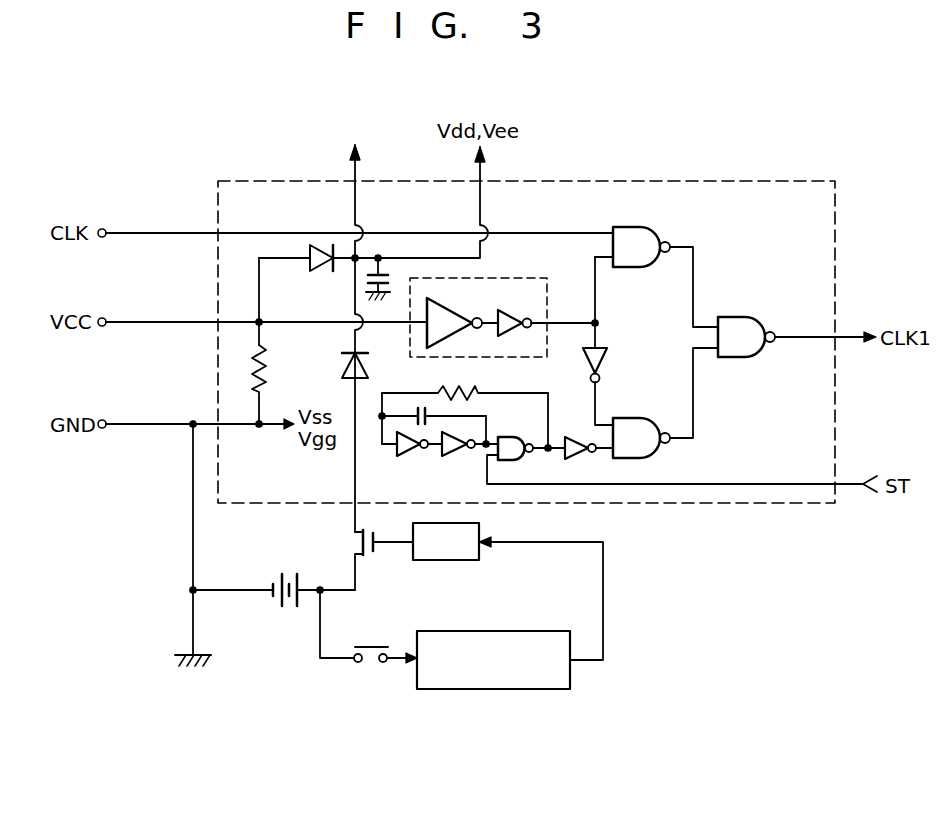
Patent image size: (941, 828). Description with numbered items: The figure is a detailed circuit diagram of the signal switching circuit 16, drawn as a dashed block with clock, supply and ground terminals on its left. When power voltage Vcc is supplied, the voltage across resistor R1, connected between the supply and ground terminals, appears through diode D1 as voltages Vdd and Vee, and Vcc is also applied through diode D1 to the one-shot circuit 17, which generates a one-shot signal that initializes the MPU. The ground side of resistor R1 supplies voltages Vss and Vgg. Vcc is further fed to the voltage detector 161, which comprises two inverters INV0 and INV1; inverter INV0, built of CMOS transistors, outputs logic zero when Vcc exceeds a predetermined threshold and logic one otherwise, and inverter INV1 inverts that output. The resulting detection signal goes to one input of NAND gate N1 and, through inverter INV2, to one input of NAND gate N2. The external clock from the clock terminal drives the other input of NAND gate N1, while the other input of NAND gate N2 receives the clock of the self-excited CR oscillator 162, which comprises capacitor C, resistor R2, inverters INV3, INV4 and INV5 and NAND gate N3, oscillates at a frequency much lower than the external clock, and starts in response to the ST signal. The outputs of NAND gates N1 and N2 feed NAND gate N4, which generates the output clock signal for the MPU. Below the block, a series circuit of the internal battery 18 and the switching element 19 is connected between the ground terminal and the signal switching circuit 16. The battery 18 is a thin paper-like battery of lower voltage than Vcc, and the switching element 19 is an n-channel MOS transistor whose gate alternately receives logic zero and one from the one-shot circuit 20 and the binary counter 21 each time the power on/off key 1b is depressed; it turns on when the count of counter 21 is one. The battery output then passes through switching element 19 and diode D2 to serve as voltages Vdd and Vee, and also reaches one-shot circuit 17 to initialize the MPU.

The signal switching circuit 16 is at (762, 162).
The voltage detector 161 is at (502, 302).
The CR oscillator 162 is at (620, 451).
The one-shot circuit 17 is at (330, 315).
The internal battery 18 is at (285, 573).
The switching element 19 is at (352, 541).
The one-shot circuit 20 is at (505, 630).
The binary counter 21 is at (437, 562).
The power on/off key 1b is at (380, 645).
The diode D1 is at (307, 273).
The diode D2 is at (372, 367).
The resistor R1 is at (273, 384).
The resistor R2 is at (465, 383).
The capacitor C is at (434, 408).
The inverter INV0 is at (462, 312).
The inverter INV1 is at (527, 268).
The inverter INV2 is at (617, 386).
The inverter INV3 is at (402, 466).
The inverter INV4 is at (463, 457).
The inverter INV5 is at (592, 461).
The NAND gate N1 is at (665, 265).
The NAND gate N2 is at (665, 403).
The NAND gate N3 is at (531, 436).
The NAND gate N4 is at (797, 325).